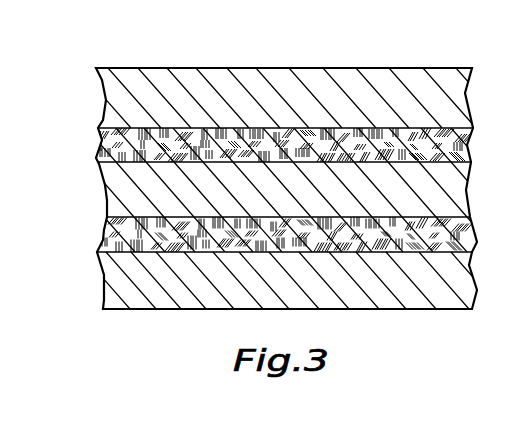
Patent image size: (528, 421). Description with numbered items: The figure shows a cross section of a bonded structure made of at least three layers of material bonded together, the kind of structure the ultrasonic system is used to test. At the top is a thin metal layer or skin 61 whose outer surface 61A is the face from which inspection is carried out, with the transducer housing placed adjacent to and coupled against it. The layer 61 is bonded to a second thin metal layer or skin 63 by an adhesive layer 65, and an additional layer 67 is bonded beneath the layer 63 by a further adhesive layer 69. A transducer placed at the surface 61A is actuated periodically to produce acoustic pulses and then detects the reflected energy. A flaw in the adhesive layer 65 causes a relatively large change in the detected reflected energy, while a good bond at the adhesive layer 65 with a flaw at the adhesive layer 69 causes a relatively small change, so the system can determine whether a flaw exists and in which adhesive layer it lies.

The thin metal layer 61 is at (107, 101).
The surface 61A is at (243, 68).
The adhesive layer 65 is at (98, 152).
The thin metal layer 63 is at (105, 197).
The adhesive layer 69 is at (107, 243).
The additional layer 67 is at (104, 290).